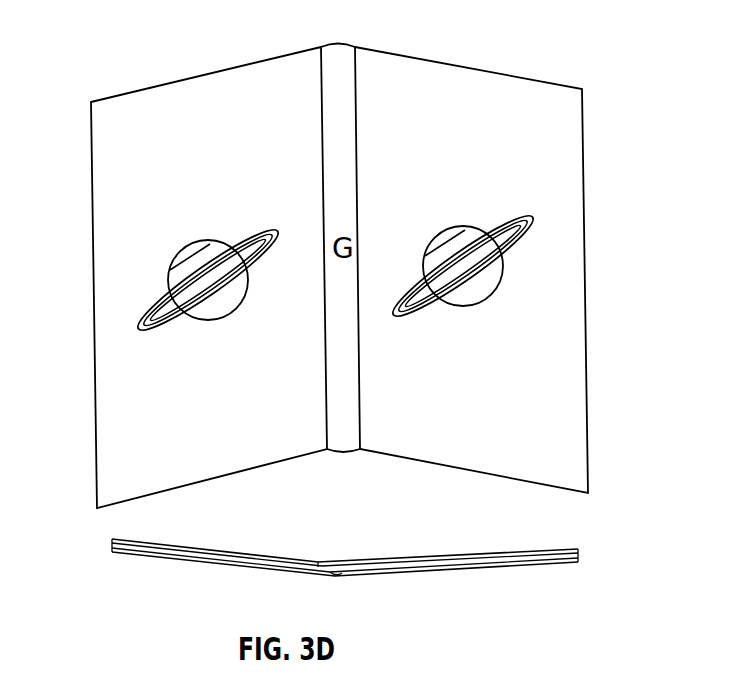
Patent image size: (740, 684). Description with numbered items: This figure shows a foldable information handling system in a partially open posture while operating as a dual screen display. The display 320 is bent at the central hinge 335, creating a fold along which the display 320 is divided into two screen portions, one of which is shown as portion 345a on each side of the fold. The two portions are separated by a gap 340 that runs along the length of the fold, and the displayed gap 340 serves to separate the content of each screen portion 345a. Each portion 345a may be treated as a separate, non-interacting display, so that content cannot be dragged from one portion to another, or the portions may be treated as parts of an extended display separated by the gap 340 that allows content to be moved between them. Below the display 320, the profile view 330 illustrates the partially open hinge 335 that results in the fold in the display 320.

The display 320 is at (112, 254).
The gap 340 is at (340, 398).
The first portion of the folded display 345a is at (252, 90).
The profile view 330 is at (110, 548).
The hinge 335 is at (343, 580).